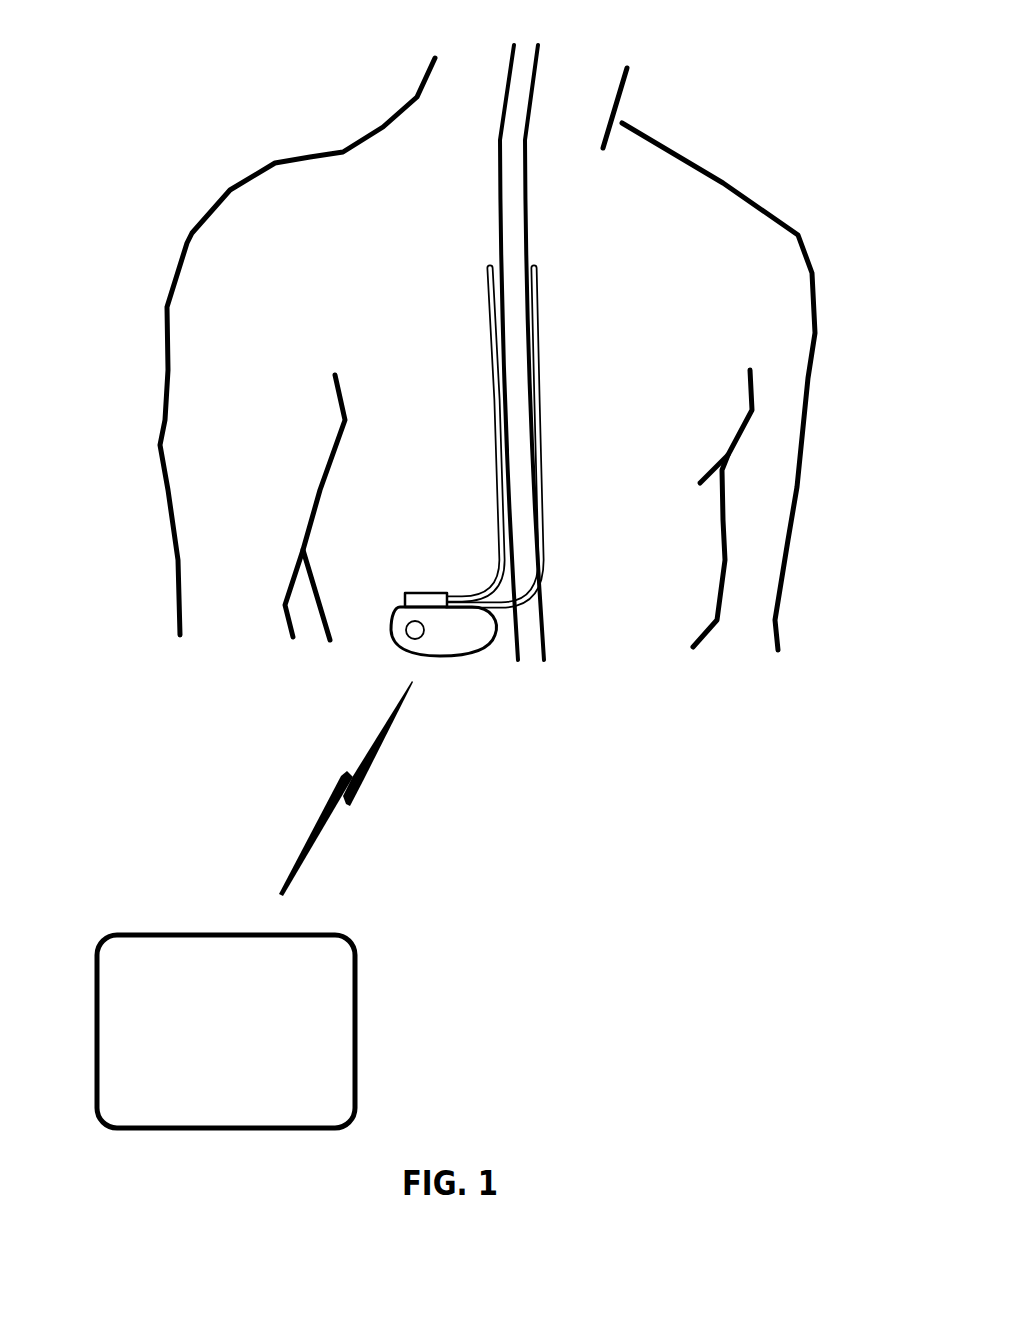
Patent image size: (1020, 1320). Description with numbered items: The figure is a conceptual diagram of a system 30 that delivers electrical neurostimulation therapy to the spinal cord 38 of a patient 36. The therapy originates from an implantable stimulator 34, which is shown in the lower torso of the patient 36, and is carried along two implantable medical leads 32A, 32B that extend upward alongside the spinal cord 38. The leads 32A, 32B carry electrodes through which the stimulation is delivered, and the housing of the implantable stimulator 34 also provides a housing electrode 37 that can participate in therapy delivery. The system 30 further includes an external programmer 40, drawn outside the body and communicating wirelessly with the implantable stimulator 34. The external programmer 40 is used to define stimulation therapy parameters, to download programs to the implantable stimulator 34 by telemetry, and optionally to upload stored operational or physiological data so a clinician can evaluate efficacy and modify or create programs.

The system 30 is at (157, 124).
The implantable medical lead 32A is at (487, 310).
The implantable medical lead 32B is at (535, 317).
The implantable stimulator 34 is at (418, 592).
The patient 36 is at (718, 183).
The housing electrode 37 is at (406, 632).
The spinal cord 38 is at (526, 167).
The external programmer 40 is at (360, 1032).